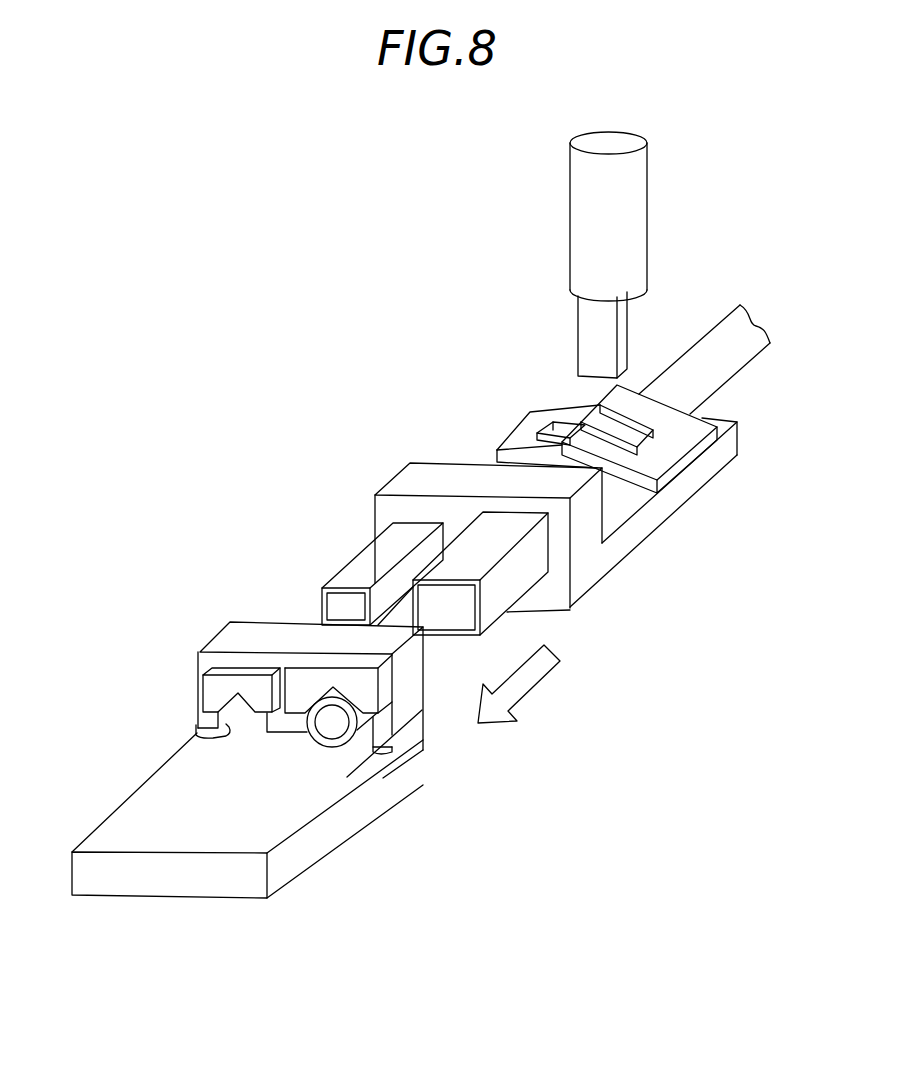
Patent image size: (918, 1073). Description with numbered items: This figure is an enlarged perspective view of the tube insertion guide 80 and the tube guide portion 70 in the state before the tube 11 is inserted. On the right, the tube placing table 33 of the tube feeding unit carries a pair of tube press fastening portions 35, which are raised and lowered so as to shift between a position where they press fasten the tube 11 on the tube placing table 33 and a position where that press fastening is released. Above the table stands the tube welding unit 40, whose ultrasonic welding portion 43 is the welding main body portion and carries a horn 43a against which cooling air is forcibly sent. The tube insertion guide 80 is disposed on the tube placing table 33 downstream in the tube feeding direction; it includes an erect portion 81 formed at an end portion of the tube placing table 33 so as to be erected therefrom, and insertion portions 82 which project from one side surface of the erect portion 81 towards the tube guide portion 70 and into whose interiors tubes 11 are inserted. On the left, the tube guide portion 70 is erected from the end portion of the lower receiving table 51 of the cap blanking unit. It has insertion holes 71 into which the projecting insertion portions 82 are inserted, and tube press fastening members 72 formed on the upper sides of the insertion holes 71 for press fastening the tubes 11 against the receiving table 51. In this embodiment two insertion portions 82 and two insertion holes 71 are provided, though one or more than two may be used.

The tube 11 is at (443, 636).
The tube placing table 33 is at (707, 467).
The tube press fastening portions 35 is at (680, 418).
The tube welding unit 40 is at (668, 194).
The ultrasonic welding portion 43 is at (582, 181).
The horn 43a is at (593, 343).
The lower receiving table 51 is at (130, 825).
The tube guide portion 70 is at (313, 637).
The insertion holes 71 is at (205, 725).
The tube press fastening members 72 is at (317, 682).
The tube insertion guide 80 is at (391, 447).
The erect portion 81 is at (583, 518).
The insertion portions 82 is at (357, 565).